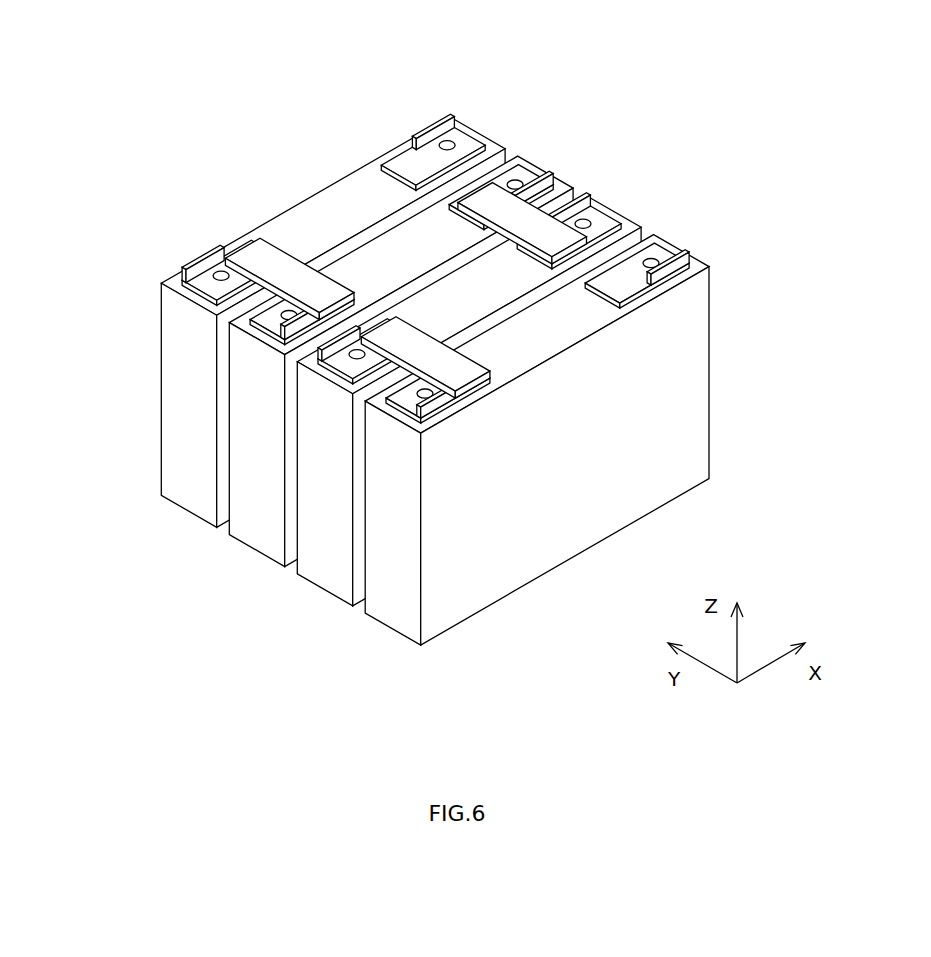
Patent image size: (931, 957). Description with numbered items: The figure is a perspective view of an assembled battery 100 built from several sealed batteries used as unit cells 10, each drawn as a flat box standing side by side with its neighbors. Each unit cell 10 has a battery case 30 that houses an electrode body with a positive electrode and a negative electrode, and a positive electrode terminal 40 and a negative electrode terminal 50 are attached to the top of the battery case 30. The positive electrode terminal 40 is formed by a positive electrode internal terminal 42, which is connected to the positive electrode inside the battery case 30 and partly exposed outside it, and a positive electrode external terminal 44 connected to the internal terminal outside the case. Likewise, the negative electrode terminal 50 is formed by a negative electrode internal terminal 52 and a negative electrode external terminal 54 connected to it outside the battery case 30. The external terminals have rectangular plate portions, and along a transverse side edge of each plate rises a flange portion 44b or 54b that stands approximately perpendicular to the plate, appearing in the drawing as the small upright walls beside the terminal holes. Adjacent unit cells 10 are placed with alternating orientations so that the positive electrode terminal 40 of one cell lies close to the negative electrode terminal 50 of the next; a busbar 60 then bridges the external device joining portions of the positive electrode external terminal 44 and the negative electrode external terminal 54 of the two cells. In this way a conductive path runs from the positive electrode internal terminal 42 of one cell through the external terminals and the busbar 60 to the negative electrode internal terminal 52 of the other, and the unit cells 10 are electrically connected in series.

The assembled battery 100 is at (149, 48).
The unit cell 10 is at (257, 538).
The battery case 30 is at (488, 594).
The positive electrode terminal 40 is at (449, 210).
The positive electrode internal terminal 42 is at (215, 270).
The positive electrode external terminal 44 is at (450, 199).
The flange portion 44b is at (545, 188).
The negative electrode terminal 50 is at (393, 219).
The negative electrode internal terminal 52 is at (452, 135).
The negative electrode external terminal 54 is at (415, 238).
The flange portion 54b is at (413, 133).
The busbar 60 is at (272, 257).